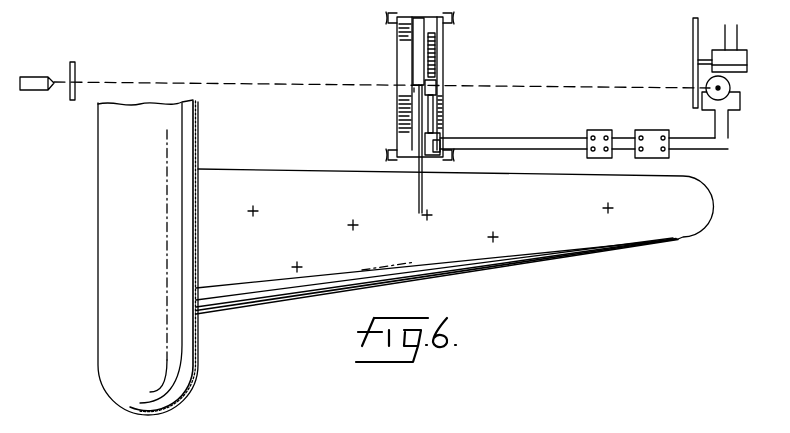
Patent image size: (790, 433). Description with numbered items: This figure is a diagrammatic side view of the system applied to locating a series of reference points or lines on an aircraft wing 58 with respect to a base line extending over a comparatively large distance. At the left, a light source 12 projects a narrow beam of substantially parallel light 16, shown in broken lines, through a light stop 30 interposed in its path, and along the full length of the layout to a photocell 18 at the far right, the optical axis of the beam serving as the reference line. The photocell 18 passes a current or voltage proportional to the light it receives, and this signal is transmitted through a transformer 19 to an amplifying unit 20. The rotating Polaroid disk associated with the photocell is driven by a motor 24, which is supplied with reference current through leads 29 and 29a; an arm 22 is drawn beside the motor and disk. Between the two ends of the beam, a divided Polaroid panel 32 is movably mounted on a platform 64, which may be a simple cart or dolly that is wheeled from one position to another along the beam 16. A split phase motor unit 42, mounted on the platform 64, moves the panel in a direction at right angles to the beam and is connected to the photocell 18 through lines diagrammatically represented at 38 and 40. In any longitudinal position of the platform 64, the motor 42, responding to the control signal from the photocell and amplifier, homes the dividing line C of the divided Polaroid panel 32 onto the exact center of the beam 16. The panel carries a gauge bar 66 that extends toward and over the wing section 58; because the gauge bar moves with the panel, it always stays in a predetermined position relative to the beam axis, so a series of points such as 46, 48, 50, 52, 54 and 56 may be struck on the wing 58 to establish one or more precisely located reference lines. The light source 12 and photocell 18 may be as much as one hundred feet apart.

The light source 12 is at (29, 77).
The light stop 30 is at (76, 71).
The beam of light 16 is at (218, 84).
The divided Polaroid panel 32 is at (405, 60).
The dividing line C is at (413, 90).
The platform 64 is at (444, 62).
The gauge bar 66 is at (423, 193).
The split phase motor unit 42 is at (440, 137).
The line 38 is at (553, 137).
The line 40 is at (522, 148).
The amplifier 20 is at (597, 132).
The transformer 19 is at (647, 131).
The photocell 18 is at (731, 88).
The arm 22 is at (693, 34).
The motor 24 is at (746, 60).
The lead 29 is at (725, 39).
The lead 29a is at (737, 42).
The reference point 46 is at (258, 208).
The reference point 48 is at (302, 265).
The reference point 50 is at (358, 223).
The reference point 52 is at (432, 215).
The reference point 54 is at (498, 236).
The reference point 56 is at (613, 207).
The aircraft wing 58 is at (466, 272).